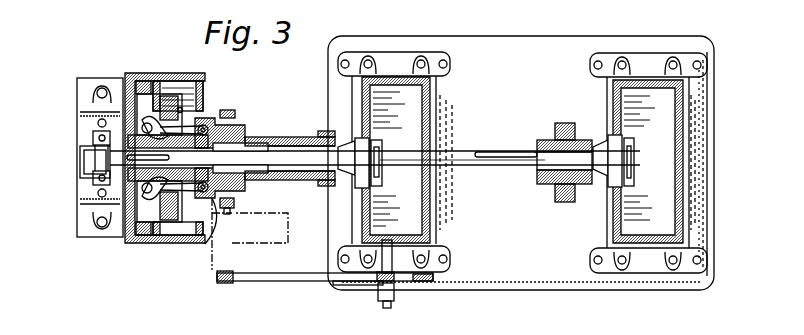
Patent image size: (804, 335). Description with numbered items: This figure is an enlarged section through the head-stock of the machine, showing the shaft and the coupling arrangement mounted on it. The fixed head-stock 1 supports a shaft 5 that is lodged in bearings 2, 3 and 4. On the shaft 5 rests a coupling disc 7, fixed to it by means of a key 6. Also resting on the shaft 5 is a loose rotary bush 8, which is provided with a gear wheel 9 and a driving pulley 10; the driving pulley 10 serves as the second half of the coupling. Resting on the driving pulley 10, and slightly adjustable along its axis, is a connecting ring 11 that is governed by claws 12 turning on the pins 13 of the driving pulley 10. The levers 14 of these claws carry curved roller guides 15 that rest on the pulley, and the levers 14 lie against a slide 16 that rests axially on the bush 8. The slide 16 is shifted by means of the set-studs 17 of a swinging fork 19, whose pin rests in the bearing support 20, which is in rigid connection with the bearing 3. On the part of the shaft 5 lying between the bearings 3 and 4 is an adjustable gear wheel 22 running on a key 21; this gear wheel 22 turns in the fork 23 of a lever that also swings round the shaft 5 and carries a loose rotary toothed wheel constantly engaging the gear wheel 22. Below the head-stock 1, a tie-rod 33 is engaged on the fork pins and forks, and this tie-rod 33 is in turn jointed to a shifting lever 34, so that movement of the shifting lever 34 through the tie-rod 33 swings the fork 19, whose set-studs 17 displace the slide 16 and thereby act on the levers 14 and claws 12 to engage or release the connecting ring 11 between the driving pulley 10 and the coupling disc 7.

The head-stock 1 is at (549, 48).
The bearing 2 is at (82, 159).
The bearing 3 is at (432, 215).
The bearing 4 is at (615, 228).
The shaft 5 is at (308, 160).
The key 6 is at (125, 160).
The coupling disc 7 is at (152, 82).
The loose rotary bush 8 is at (283, 142).
The gear wheel 9 is at (320, 137).
The driving pulley 10 is at (185, 77).
The connecting ring 11 is at (130, 100).
The claws 12 is at (100, 112).
The pins 13 is at (125, 129).
The levers 14 is at (183, 118).
The curved roller guides 15 is at (207, 110).
The slide 16 is at (248, 130).
The set-studs 17 is at (236, 210).
The swinging fork 19 is at (213, 222).
The bearing support 20 is at (289, 232).
The key 21 is at (487, 151).
The adjustable gear wheel 22 is at (557, 186).
The fork 23 is at (543, 138).
The tie-rod 33 is at (262, 276).
The shifting lever 34 is at (366, 287).